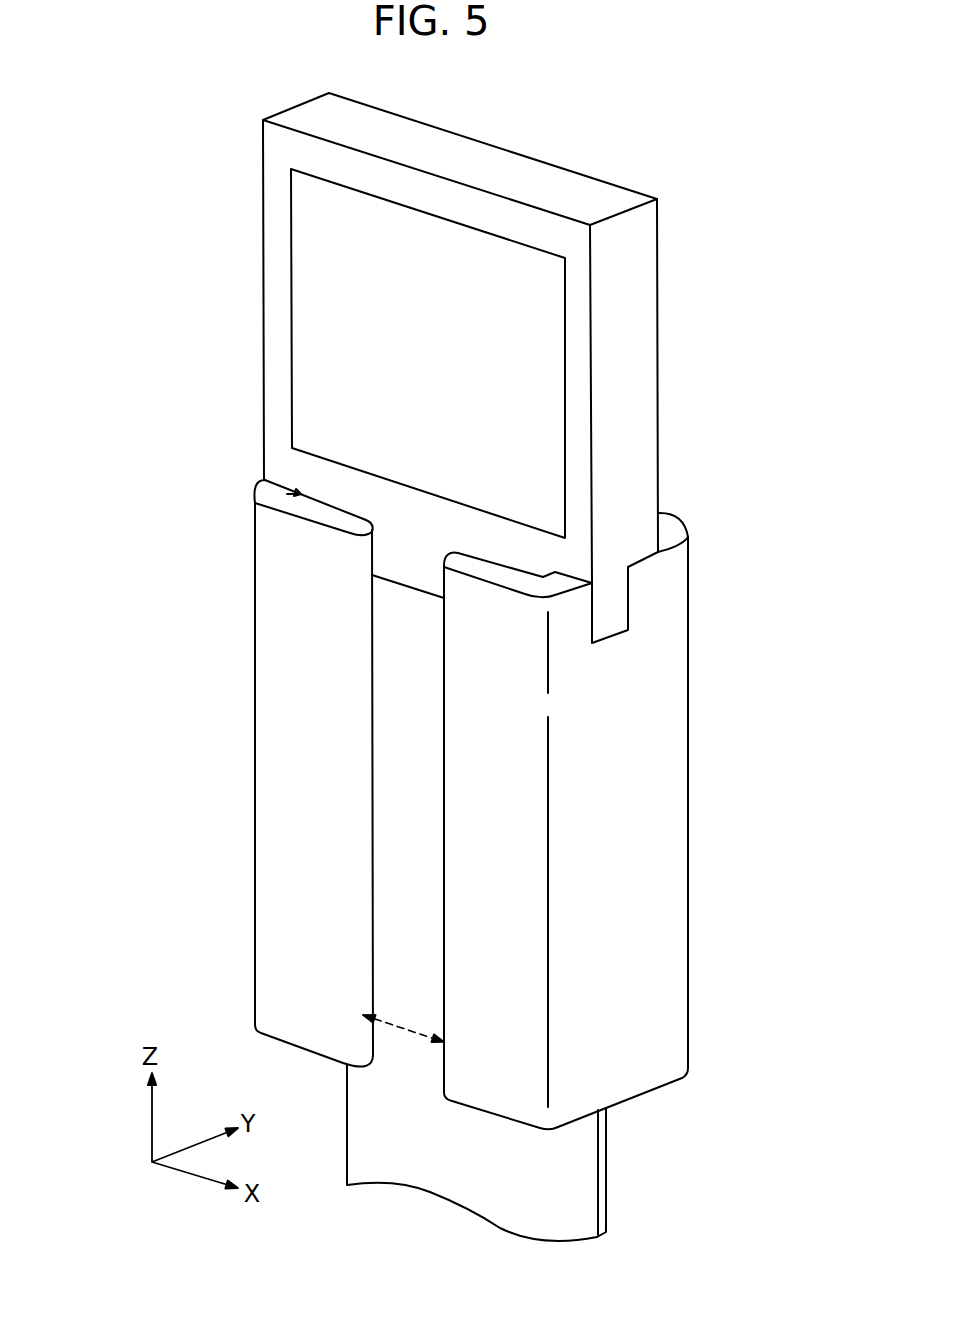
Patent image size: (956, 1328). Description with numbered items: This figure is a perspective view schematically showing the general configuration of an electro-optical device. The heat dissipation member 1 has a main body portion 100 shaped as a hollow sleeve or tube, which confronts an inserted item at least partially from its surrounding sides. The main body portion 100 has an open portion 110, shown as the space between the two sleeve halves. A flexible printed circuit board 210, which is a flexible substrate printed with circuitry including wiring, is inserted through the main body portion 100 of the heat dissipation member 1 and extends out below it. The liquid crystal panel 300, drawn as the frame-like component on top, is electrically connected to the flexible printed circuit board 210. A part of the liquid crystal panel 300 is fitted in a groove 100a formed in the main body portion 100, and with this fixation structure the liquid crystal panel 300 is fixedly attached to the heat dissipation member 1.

The heat dissipation member 1 is at (474, 672).
The main body portion 100 is at (668, 530).
The groove 100a is at (612, 637).
The open portion 110 is at (407, 1030).
The flexible printed circuit board 210 is at (575, 1168).
The liquid crystal panel 300 is at (277, 300).